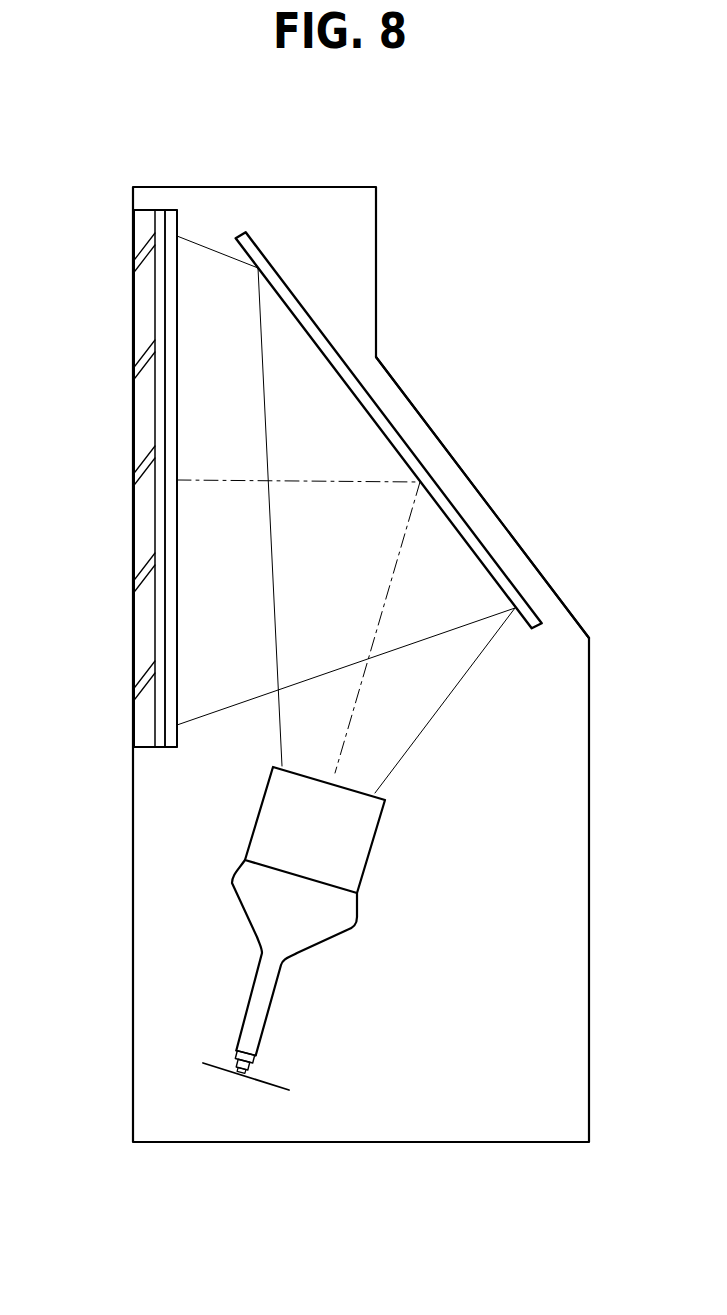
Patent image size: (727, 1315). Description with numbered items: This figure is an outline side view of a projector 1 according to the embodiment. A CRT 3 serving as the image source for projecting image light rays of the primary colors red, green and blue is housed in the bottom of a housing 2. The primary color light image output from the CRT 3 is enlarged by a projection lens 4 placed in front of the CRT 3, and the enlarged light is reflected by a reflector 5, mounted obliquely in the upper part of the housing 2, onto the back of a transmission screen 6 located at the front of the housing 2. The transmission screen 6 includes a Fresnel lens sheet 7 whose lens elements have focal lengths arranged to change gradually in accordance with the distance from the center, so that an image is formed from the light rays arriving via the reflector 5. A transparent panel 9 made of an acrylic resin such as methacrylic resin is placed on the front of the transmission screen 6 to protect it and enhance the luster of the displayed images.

The projector 1 is at (420, 412).
The housing 2 is at (538, 572).
The CRT 3 is at (317, 930).
The projection lens 4 is at (360, 846).
The reflector 5 is at (292, 298).
The transmission screen 6 is at (165, 212).
The Fresnel lens sheet 7 is at (175, 343).
The transparent panel 9 is at (147, 603).